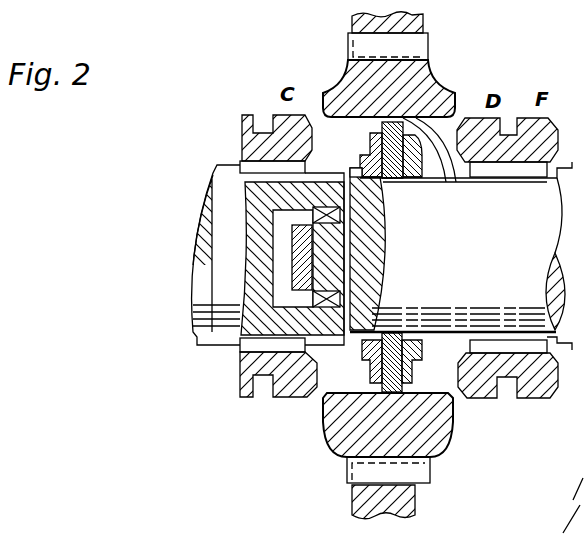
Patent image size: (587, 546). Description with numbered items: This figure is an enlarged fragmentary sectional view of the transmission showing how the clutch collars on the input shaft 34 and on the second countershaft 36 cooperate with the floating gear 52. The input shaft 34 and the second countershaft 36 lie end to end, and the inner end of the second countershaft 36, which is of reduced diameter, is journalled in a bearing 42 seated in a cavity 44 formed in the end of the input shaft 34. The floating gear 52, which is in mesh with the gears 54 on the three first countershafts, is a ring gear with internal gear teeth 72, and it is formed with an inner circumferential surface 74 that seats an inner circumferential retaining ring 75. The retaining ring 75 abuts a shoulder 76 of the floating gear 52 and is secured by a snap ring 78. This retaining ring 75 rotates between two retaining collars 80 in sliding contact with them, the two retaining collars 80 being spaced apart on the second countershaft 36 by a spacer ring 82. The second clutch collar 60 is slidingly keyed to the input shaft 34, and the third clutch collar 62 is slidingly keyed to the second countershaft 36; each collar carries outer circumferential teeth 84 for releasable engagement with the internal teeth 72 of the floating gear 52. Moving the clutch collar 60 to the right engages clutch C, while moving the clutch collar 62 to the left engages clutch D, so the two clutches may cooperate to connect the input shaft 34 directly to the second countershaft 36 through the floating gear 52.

The input shaft 34 is at (268, 255).
The second countershaft 36 is at (461, 256).
The bearing 42 is at (315, 208).
The cavity 44 is at (283, 277).
The floating gear 52 is at (423, 97).
The gears 54 is at (420, 25).
The second clutch collar 60 is at (297, 367).
The third clutch collar 62 is at (490, 367).
The internal gear teeth 72 is at (355, 393).
The inner circumferential surface 74 is at (397, 127).
The retaining ring 75 is at (438, 183).
The shoulder 76 is at (447, 167).
The snap ring 78 is at (382, 120).
The retaining collars 80 is at (422, 335).
The spacer ring 82 is at (398, 184).
The outer circumferential teeth 84 is at (282, 120).